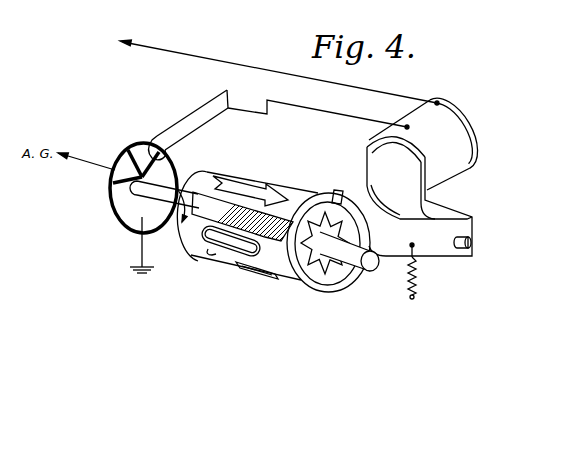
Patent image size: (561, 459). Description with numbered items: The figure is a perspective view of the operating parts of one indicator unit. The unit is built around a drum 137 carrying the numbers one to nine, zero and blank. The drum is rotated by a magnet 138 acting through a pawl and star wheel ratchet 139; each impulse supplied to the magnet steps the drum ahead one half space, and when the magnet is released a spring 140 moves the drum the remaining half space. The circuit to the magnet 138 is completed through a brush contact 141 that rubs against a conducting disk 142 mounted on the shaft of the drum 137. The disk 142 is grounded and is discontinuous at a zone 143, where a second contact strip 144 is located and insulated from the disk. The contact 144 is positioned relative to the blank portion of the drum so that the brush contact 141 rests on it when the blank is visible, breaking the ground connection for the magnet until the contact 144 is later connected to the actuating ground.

The drum 137 is at (290, 278).
The magnet 138 is at (462, 148).
The pawl and star wheel ratchet 139 is at (340, 251).
The spring 140 is at (417, 291).
The brush contact 141 is at (178, 122).
The conducting disk 142 is at (133, 212).
The zone 143 is at (118, 197).
The second contact strip 144 is at (122, 173).